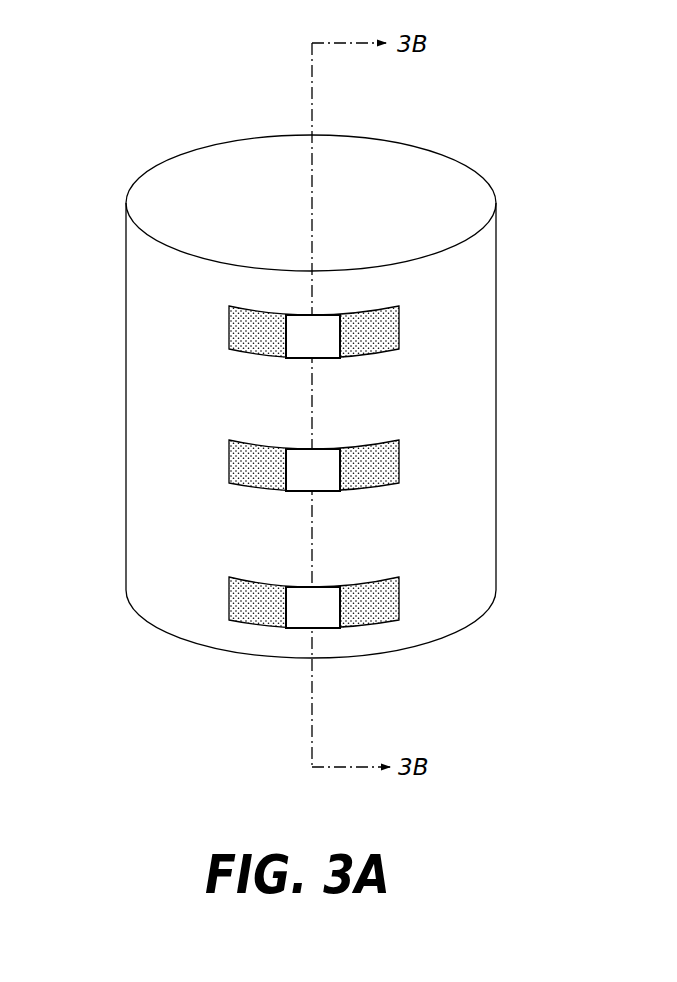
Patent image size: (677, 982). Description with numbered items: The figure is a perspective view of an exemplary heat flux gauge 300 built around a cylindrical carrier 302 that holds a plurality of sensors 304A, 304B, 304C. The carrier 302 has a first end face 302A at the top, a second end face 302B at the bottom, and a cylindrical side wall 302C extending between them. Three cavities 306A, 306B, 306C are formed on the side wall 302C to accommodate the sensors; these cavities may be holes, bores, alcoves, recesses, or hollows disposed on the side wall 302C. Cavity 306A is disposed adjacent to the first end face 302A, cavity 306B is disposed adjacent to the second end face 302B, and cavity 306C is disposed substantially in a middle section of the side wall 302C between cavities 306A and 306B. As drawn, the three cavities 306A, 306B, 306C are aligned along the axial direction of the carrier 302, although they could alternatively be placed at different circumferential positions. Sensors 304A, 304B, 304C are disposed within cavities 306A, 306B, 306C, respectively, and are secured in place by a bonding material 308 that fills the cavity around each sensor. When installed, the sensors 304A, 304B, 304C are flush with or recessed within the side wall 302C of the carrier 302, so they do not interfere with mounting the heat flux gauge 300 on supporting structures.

The heat flux gauge 300 is at (522, 112).
The cylindrical carrier 302 is at (369, 391).
The first end face 302A is at (406, 156).
The second end face 302B is at (425, 646).
The cylindrical side wall 302C is at (489, 372).
The sensor 304A is at (306, 325).
The sensor 304B is at (306, 596).
The sensor 304C is at (305, 460).
The cavity 306A is at (375, 309).
The cavity 306B is at (383, 580).
The cavity 306C is at (372, 445).
The bonding material 308 is at (390, 337).